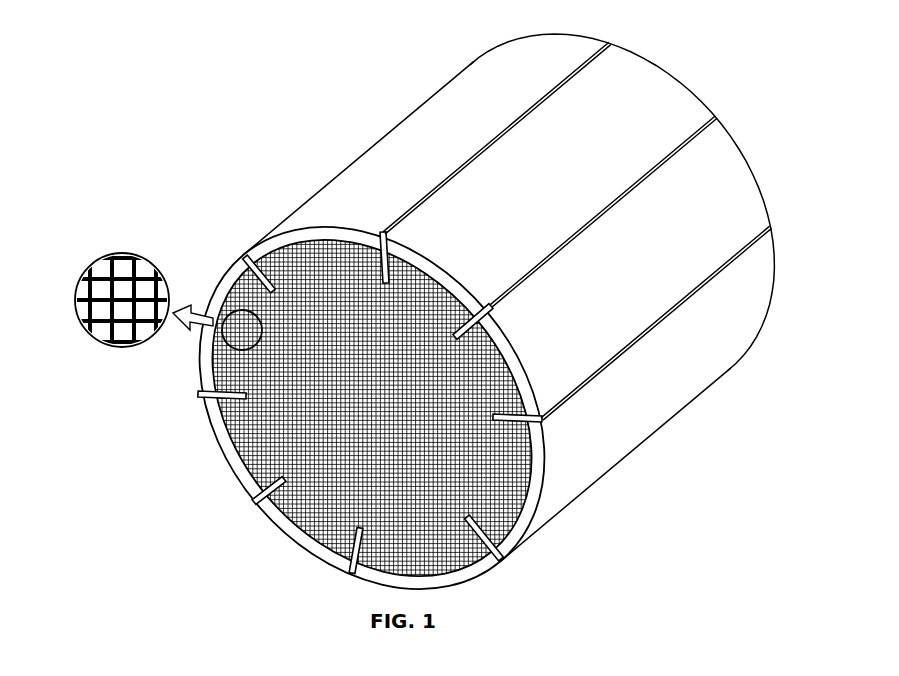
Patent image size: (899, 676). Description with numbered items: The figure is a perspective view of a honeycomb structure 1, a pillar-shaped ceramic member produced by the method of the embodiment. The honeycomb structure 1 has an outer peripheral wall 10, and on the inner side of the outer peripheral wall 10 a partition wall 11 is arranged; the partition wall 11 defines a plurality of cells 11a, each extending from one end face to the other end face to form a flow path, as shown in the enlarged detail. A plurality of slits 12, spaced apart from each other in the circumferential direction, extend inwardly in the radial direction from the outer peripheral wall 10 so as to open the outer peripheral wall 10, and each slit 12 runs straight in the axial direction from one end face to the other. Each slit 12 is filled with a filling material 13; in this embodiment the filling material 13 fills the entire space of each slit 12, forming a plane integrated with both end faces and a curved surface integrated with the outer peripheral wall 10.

The honeycomb structure 1 is at (699, 98).
The outer peripheral wall 10 is at (278, 224).
The partition wall 11 is at (107, 288).
The cell 11a is at (107, 250).
The slit 12 is at (253, 495).
The filling material 13 is at (262, 499).